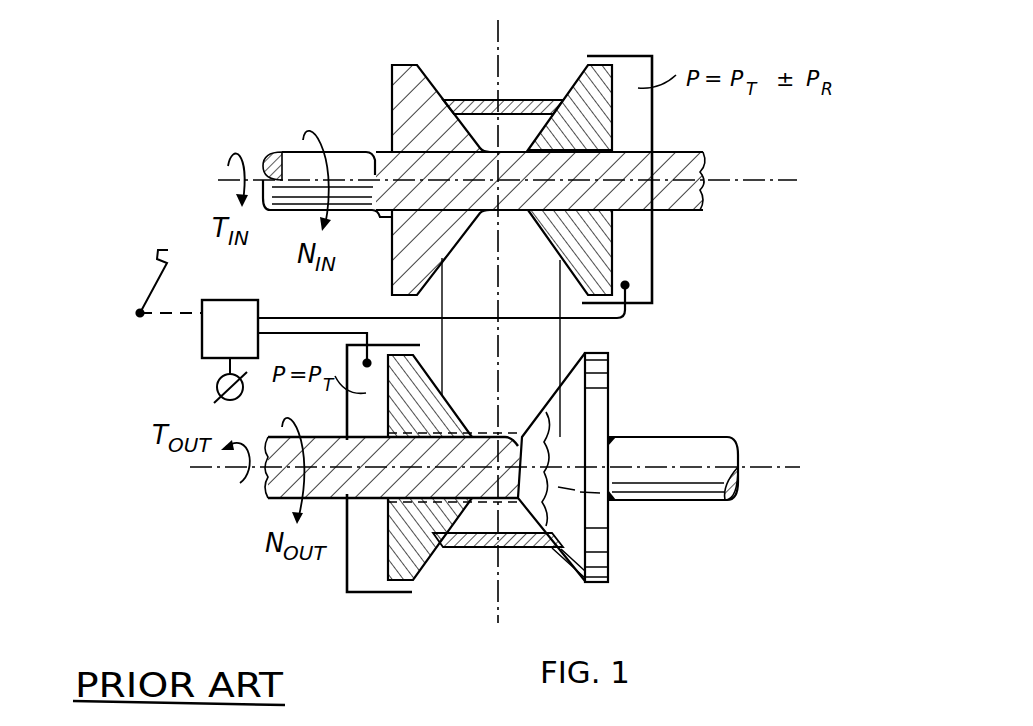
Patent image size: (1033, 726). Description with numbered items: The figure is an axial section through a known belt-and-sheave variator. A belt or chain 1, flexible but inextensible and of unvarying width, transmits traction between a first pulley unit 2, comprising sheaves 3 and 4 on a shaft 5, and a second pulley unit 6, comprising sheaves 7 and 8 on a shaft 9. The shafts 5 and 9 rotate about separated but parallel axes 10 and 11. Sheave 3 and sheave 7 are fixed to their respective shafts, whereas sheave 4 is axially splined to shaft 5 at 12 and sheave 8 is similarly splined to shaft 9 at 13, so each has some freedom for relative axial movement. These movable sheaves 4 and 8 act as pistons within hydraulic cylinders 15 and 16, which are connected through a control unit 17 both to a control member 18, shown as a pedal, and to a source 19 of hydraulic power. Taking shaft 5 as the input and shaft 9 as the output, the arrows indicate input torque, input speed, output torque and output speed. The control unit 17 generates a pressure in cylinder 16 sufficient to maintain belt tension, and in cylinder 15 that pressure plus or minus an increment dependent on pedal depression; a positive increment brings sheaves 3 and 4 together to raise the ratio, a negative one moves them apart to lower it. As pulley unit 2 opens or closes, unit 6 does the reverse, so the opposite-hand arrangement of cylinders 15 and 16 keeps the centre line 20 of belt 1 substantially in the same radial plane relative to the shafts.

The belt or chain 1 is at (525, 100).
The first pulley unit 2 is at (541, 151).
The sheave 3 is at (401, 66).
The sheave 4 is at (607, 68).
The shaft 5 is at (348, 152).
The second pulley unit 6 is at (531, 476).
The sheave 7 is at (571, 553).
The sheave 8 is at (407, 552).
The shaft 9 is at (668, 437).
The axis 10 is at (768, 178).
The axis 11 is at (767, 457).
The axial spline 12 is at (594, 136).
The axial spline 13 is at (448, 418).
The hydraulic cylinder 15 is at (632, 247).
The hydraulic cylinder 16 is at (360, 558).
The control unit 17 is at (202, 335).
The control member 18 is at (152, 283).
The source of hydraulic power 19 is at (215, 385).
The centre line 20 is at (490, 600).